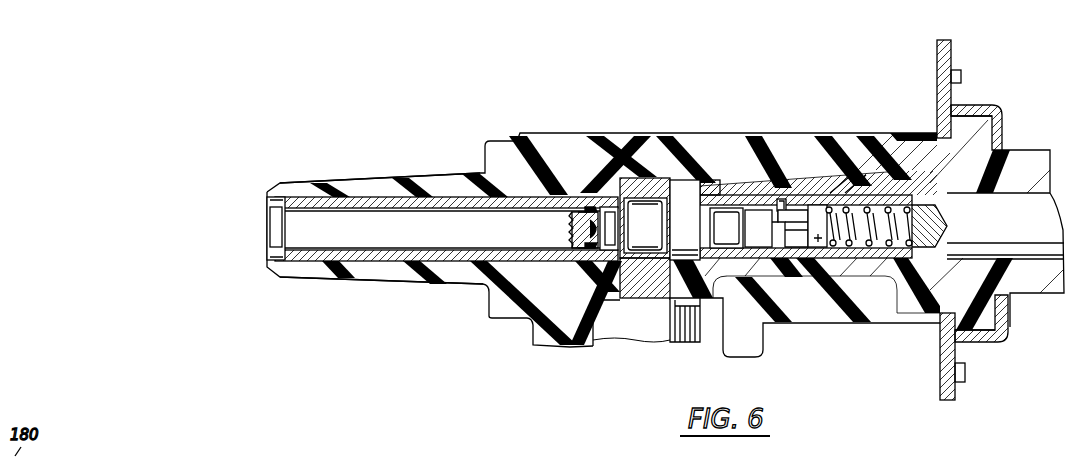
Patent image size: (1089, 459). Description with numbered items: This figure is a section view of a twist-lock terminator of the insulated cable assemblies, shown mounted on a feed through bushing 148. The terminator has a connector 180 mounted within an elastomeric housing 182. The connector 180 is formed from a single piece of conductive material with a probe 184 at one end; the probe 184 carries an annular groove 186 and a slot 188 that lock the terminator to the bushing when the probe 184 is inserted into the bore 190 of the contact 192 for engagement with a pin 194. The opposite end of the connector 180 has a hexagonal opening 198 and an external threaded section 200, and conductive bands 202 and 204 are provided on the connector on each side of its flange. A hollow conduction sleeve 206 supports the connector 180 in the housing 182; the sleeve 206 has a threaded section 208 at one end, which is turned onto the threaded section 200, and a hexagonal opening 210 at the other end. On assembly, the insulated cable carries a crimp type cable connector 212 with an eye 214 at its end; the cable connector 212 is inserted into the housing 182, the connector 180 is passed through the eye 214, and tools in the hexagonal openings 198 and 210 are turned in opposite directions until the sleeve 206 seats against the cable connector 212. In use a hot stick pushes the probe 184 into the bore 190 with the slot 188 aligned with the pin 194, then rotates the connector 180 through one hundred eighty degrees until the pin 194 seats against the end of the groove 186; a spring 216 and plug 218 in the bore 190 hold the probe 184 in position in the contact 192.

The feed through bushing 148 is at (870, 173).
The connector 180 is at (695, 205).
The elastomeric housing 182 is at (612, 133).
The probe 184 is at (764, 212).
The annular groove 186 is at (784, 262).
The slot 188 is at (808, 198).
The bore 190 is at (866, 248).
The contact 192 is at (923, 250).
The pin 194 is at (783, 203).
The hexagonal opening 198 is at (570, 229).
The threaded section 200 is at (585, 249).
The conductive band 202 is at (738, 215).
The conductive band 204 is at (645, 207).
The hollow conduction sleeve 206 is at (357, 197).
The threaded section 208 is at (590, 213).
The hexagonal opening 210 is at (272, 211).
The crimp type cable connector 212 is at (686, 342).
The eye 214 is at (652, 262).
The spring 216 is at (900, 205).
The plug 218 is at (818, 240).